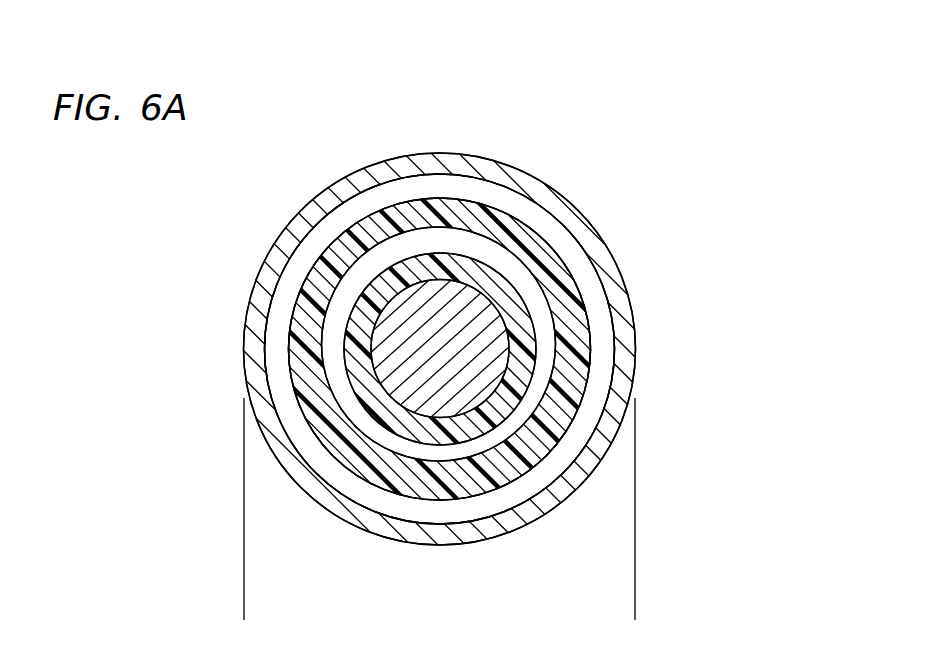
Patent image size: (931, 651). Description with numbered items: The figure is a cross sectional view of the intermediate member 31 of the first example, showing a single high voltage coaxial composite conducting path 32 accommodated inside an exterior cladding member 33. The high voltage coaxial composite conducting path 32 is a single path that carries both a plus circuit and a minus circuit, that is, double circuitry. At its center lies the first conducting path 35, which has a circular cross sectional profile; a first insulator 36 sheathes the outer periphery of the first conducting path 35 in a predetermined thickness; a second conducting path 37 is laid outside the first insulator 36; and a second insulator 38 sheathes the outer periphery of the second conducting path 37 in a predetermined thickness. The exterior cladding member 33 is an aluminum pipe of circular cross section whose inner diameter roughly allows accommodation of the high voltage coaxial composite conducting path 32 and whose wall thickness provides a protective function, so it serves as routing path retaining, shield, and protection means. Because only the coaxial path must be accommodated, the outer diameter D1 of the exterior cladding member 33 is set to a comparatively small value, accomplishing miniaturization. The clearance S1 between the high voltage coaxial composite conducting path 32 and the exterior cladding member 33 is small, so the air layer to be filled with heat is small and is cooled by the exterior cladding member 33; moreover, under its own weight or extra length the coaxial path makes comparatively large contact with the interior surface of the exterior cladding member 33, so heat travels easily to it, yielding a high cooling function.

The intermediate member 31 is at (465, 325).
The high voltage coaxial composite conducting path 32 is at (465, 325).
The exterior cladding member 33 is at (552, 203).
The first conducting path 35 is at (520, 335).
The first insulator 36 is at (555, 347).
The second conducting path 37 is at (573, 390).
The second insulator 38 is at (598, 405).
The clearance S1 is at (278, 340).
The outer diameter D1 is at (635, 603).